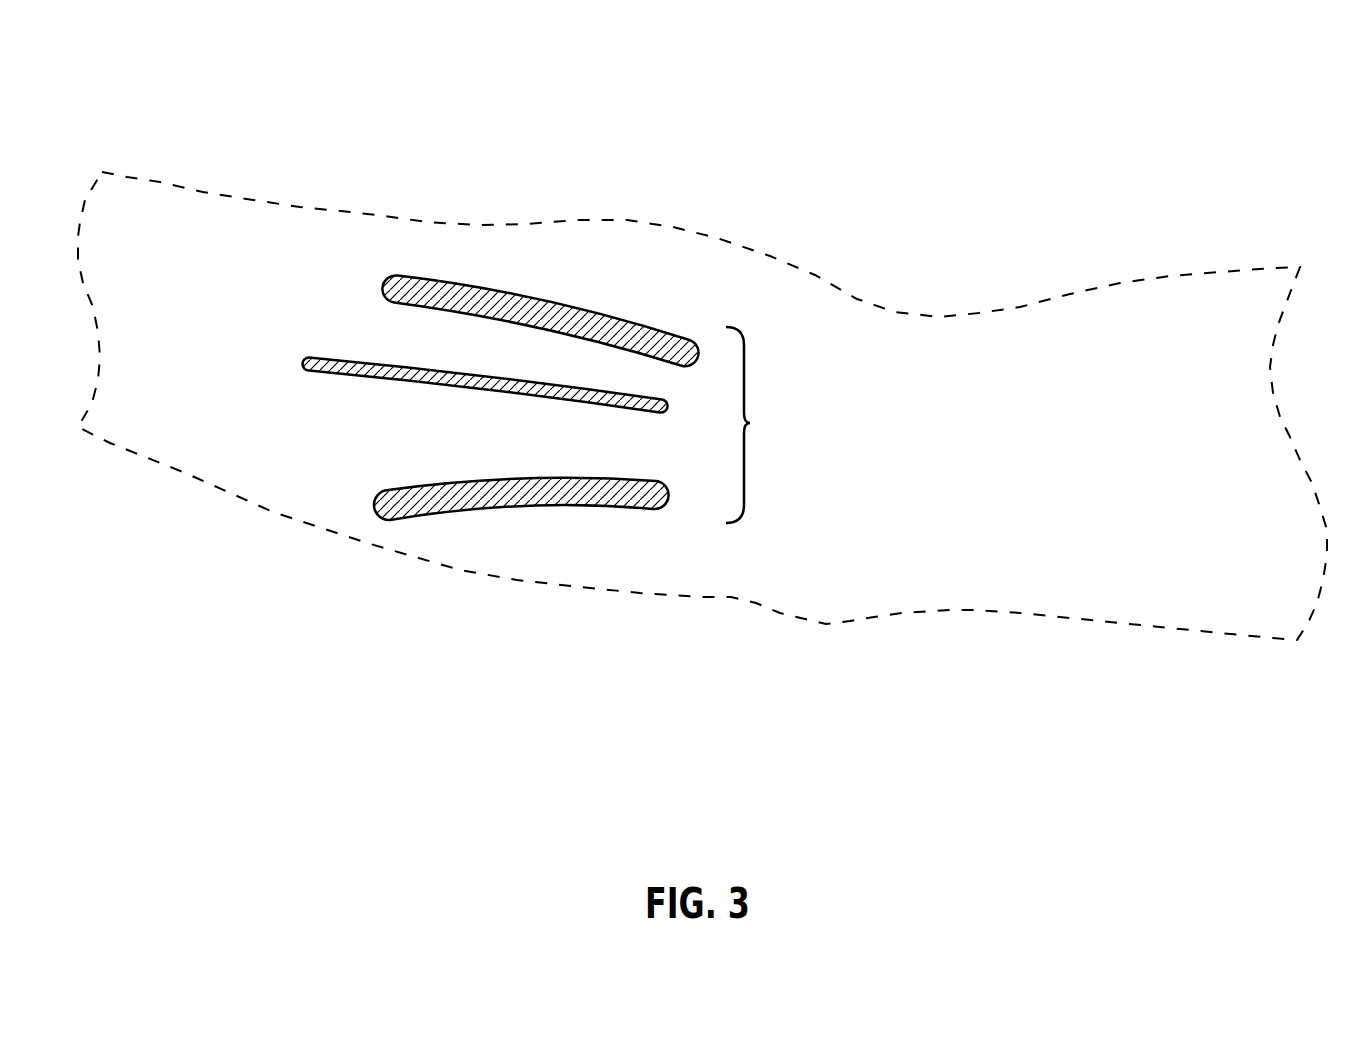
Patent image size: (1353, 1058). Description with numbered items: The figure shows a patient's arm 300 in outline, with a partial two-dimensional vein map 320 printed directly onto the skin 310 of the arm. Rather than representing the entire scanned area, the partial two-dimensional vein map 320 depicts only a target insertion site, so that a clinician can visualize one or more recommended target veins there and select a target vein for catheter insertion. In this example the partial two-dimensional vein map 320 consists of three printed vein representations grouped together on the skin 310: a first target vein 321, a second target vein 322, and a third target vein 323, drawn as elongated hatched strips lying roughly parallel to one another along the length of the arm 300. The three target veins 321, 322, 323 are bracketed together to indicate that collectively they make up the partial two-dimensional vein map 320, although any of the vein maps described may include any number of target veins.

The patient's arm 300 is at (893, 65).
The skin 310 is at (373, 257).
The partial two-dimensional vein map 320 is at (749, 424).
The first target vein 321 is at (555, 302).
The second target vein 322 is at (357, 377).
The third target vein 323 is at (510, 510).